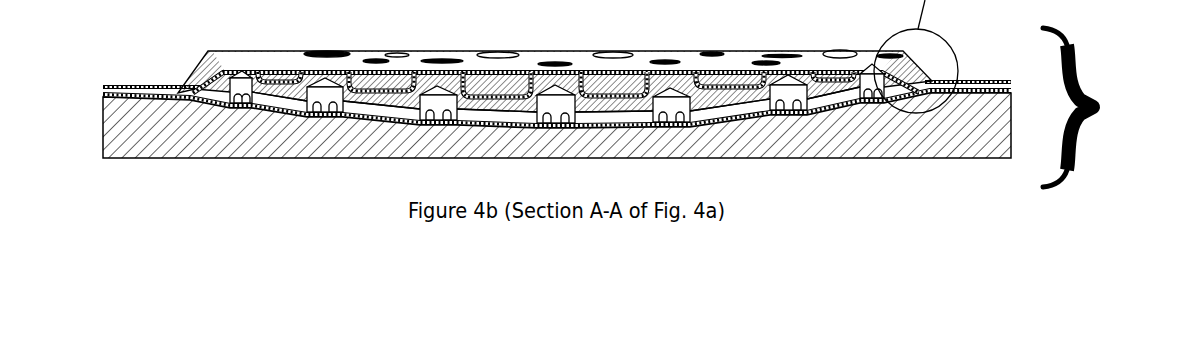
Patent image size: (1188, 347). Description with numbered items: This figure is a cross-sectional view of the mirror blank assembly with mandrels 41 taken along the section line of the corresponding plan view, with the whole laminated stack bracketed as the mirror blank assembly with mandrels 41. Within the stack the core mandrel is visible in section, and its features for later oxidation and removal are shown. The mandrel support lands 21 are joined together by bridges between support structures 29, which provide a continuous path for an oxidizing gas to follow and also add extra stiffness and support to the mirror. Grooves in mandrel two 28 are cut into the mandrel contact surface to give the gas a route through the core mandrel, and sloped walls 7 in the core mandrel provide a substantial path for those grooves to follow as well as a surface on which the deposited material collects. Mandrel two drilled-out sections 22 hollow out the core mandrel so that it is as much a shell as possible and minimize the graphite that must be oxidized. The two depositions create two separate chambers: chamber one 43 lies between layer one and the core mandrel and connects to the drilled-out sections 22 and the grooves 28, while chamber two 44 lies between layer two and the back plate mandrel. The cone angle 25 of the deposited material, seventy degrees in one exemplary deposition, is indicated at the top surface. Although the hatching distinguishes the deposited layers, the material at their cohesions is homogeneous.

The sloped walls 7 is at (206, 59).
The mandrel two drilled-out sections 22 is at (319, 64).
The cone angle 25 is at (541, 63).
The chamber two 44 is at (777, 38).
The chamber one 43 is at (557, 128).
The bridges between support structures 29 is at (556, 139).
The mandrel support lands 21 is at (702, 138).
The grooves in mandrel two 28 is at (557, 143).
The mirror blank assembly with mandrels 41 is at (1098, 107).